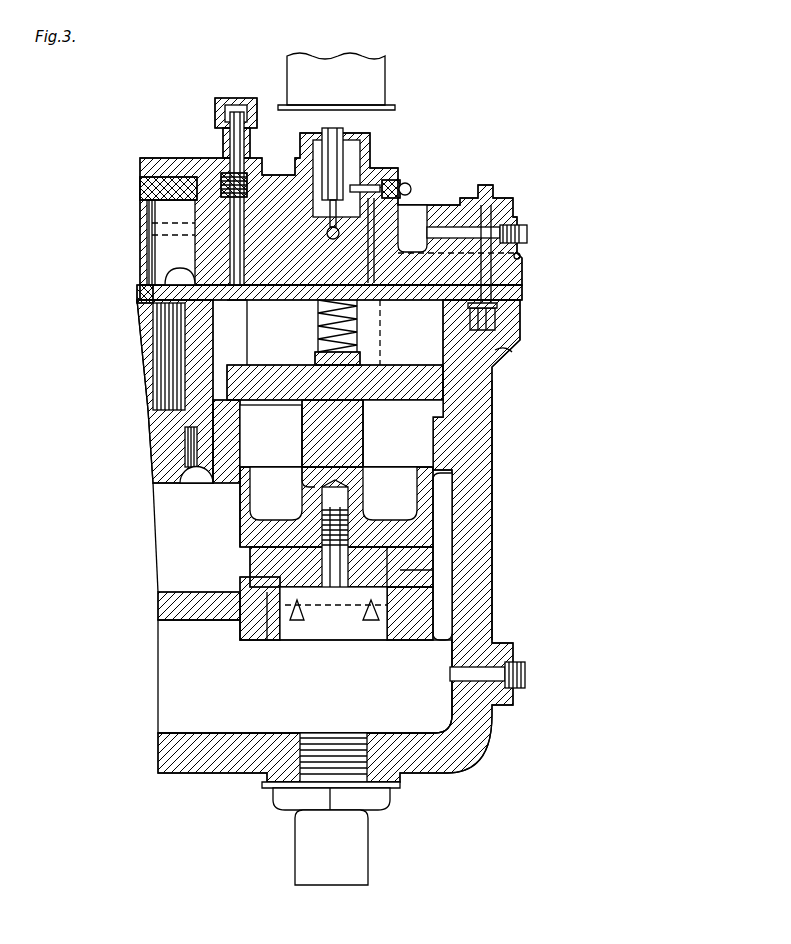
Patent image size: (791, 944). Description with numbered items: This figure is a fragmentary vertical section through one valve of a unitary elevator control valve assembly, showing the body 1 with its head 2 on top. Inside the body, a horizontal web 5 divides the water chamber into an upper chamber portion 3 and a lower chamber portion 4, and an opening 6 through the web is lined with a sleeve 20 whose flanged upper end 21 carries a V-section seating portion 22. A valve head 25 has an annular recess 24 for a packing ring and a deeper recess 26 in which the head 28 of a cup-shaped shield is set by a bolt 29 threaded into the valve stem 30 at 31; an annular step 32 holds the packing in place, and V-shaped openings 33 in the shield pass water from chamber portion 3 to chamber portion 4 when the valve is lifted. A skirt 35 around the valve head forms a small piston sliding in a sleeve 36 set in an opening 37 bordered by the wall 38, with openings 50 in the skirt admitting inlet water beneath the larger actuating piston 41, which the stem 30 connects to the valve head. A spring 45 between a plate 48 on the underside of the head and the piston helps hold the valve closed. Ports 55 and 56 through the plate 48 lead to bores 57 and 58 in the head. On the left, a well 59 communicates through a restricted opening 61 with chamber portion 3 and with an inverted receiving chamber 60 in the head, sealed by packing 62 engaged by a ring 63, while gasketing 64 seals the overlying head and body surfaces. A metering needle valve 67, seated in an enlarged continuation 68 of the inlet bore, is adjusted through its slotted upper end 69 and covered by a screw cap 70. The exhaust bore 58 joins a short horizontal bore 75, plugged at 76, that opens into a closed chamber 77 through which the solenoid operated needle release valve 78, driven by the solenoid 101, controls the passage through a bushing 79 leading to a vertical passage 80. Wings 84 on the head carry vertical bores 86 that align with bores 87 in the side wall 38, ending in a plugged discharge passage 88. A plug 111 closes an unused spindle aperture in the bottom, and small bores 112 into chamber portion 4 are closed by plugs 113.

The body 1 is at (511, 423).
The head 2 is at (286, 158).
The upper chamber portion 3 is at (165, 525).
The lower chamber portion 4 is at (195, 690).
The horizontal web 5 is at (175, 605).
The opening 6 is at (245, 625).
The sleeve 20 is at (272, 632).
The flanged upper end 21 is at (245, 582).
The seating portion 22 is at (255, 560).
The annular recess 24 is at (450, 555).
The valve head 25 is at (276, 520).
The deeper recess 26 is at (372, 527).
The head of shield 28 is at (385, 540).
The bolt 29 is at (337, 615).
The valve stem 30 is at (355, 457).
The threaded connection 31 is at (312, 480).
The annular step 32 is at (405, 573).
The openings 33 is at (300, 622).
The skirt 35 is at (230, 482).
The sleeve 36 is at (252, 447).
The opening 37 is at (195, 478).
The wall 38 is at (490, 381).
The actuating piston 41 is at (372, 365).
The spring 45 is at (318, 332).
The plate 48 is at (425, 358).
The openings 50 is at (243, 530).
The port 55 is at (247, 306).
The port 56 is at (378, 337).
The bore 57 is at (232, 237).
The exhaust bore 58 is at (403, 212).
The well 59 is at (170, 358).
The receiving chamber 60 is at (165, 210).
The restricted opening 61 is at (190, 445).
The packing 62 is at (170, 280).
The ring 63 is at (140, 300).
The packing material 64 is at (522, 287).
The metering needle valve 67 is at (228, 200).
The enlarged continuation of bore 68 is at (233, 175).
The slotted upper end 69 is at (232, 100).
The screw cap 70 is at (245, 98).
The horizontal bore 75 is at (392, 182).
The plug 76 is at (407, 184).
The closed chamber 77 is at (378, 188).
The solenoid operated needle release valve 78 is at (330, 140).
The bushing 79 is at (343, 140).
The vertical passage 80 is at (412, 228).
The wings 84 is at (500, 196).
The vertical bores 86 is at (520, 257).
The vertical bores 87 is at (500, 304).
The horizontal passage 88 is at (506, 351).
The solenoid 101 is at (385, 70).
The plug 111 is at (368, 842).
The small bores 112 is at (478, 690).
The plugs 113 is at (527, 675).